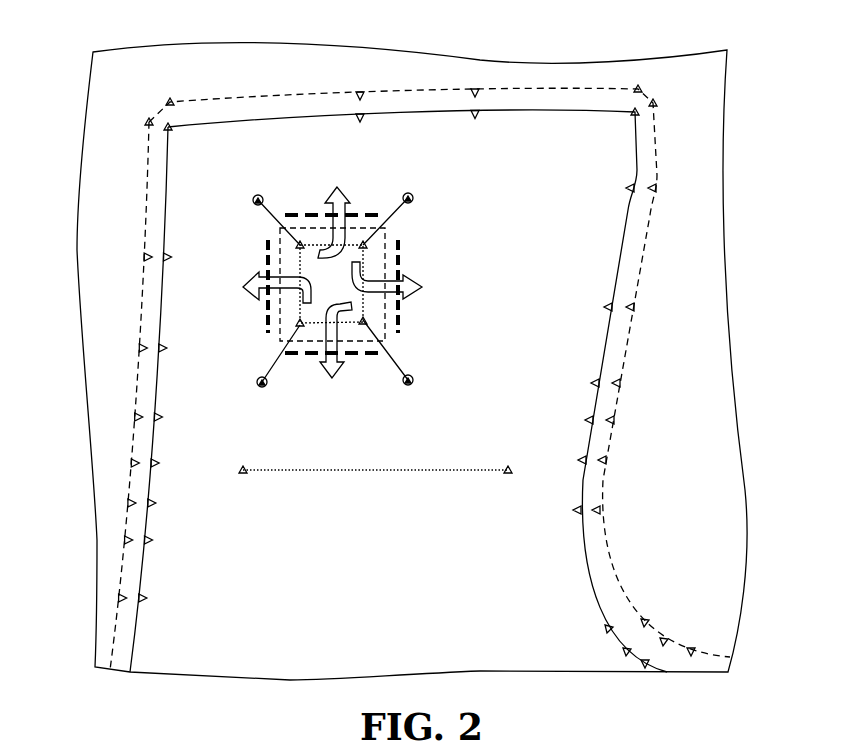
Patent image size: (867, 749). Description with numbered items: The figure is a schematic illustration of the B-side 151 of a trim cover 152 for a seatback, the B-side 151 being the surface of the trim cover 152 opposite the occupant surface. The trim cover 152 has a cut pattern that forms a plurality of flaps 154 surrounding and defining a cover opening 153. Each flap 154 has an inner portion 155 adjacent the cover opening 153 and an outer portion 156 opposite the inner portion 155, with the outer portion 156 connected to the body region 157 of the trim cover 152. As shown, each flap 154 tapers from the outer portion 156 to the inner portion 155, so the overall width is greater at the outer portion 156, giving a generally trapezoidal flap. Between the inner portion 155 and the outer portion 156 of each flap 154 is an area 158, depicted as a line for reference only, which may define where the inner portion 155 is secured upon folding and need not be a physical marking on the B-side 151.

The B-side 151 is at (443, 173).
The trim cover 152 is at (125, 238).
The cover opening 153 is at (327, 278).
The flap 154 is at (358, 203).
The inner portion 155 is at (377, 253).
The outer portion 156 is at (432, 266).
The body region 157 is at (389, 577).
The area 158 is at (318, 212).